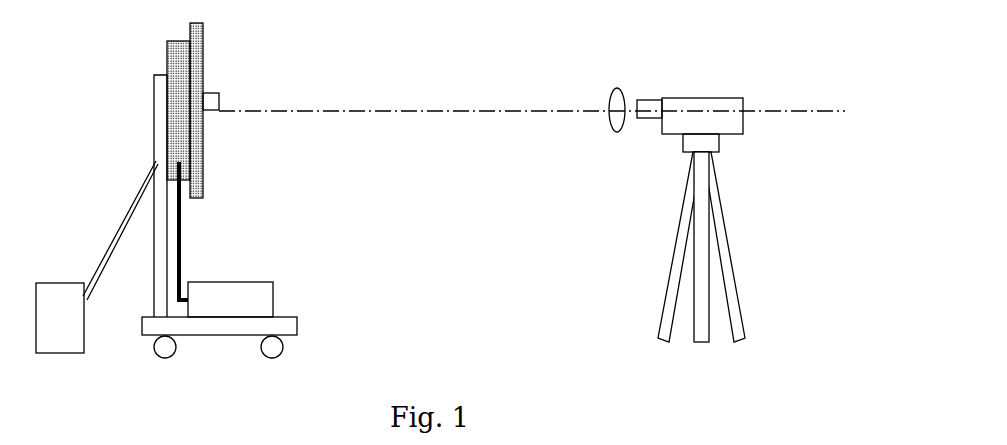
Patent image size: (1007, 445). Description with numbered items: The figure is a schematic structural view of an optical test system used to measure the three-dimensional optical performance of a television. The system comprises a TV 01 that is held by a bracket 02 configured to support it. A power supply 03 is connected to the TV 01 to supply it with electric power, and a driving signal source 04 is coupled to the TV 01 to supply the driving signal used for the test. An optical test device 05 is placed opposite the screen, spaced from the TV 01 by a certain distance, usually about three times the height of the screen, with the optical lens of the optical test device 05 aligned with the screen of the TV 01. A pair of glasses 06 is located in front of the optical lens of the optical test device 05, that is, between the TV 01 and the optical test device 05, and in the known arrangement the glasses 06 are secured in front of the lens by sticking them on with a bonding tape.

The TV 01 is at (183, 70).
The bracket 02 is at (162, 235).
The power supply 03 is at (97, 257).
The driving signal source 04 is at (252, 295).
The optical test device 05 is at (710, 122).
The glasses 06 is at (610, 90).